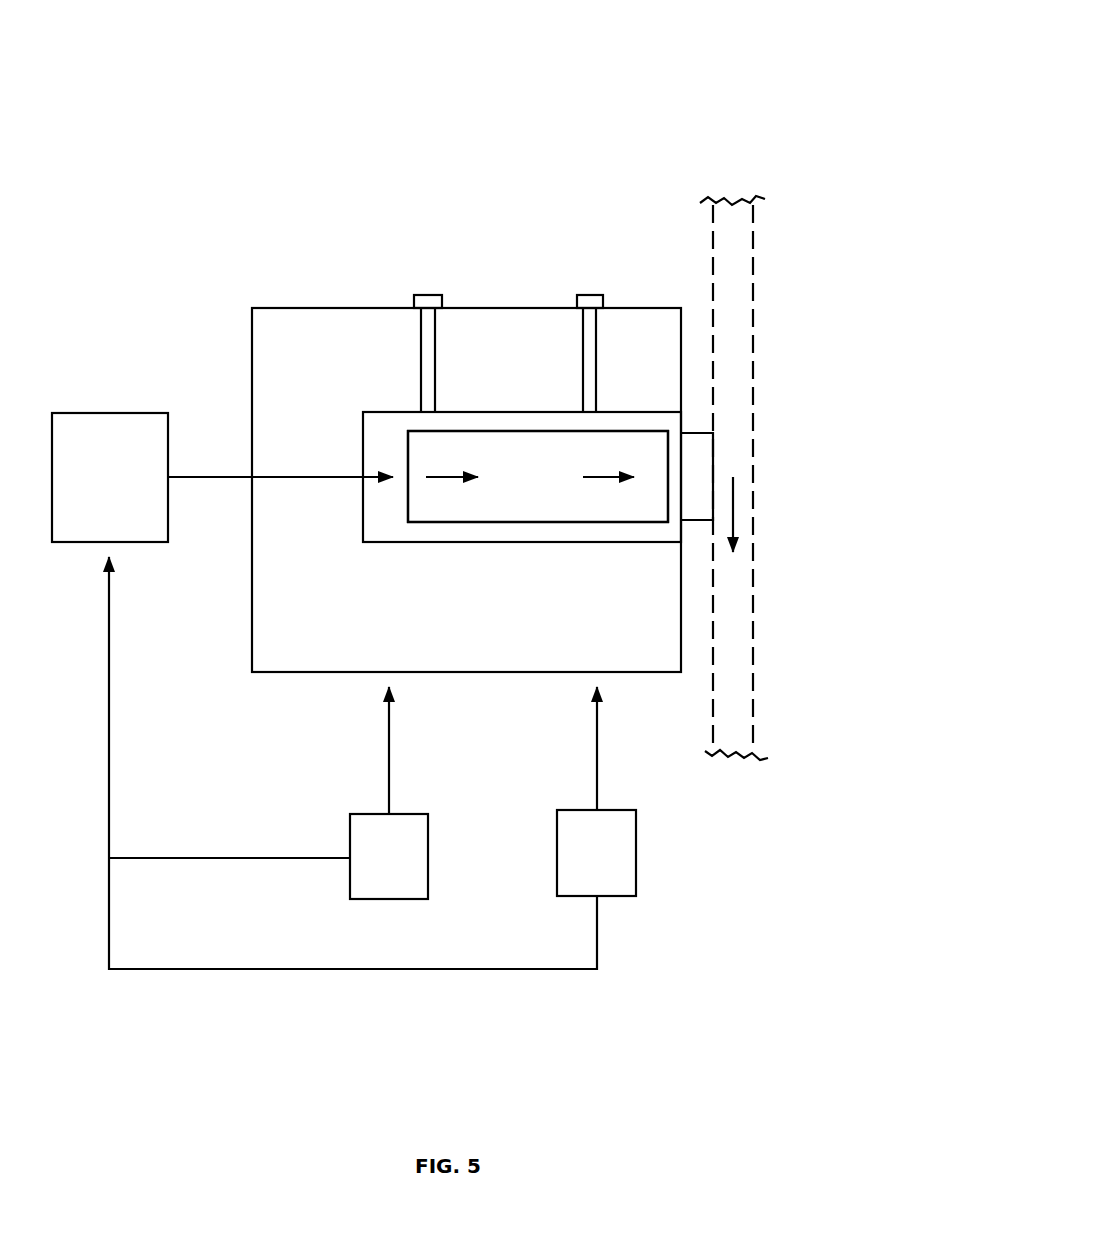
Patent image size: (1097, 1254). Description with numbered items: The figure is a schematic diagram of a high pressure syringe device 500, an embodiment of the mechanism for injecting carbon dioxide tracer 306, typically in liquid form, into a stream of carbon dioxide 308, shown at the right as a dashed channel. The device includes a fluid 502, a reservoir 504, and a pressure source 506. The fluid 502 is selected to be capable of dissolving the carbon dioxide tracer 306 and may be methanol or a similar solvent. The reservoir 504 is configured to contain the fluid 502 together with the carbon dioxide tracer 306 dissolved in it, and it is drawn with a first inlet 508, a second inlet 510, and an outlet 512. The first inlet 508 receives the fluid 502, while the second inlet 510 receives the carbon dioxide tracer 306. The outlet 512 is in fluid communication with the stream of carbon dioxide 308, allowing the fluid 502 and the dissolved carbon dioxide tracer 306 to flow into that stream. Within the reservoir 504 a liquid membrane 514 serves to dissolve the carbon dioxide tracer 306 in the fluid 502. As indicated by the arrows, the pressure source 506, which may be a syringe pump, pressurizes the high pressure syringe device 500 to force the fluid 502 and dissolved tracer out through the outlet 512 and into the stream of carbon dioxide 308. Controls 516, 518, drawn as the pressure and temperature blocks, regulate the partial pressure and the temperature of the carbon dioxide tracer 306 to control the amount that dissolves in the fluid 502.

The high pressure syringe device 500 is at (703, 92).
The fluid 502 is at (553, 465).
The carbon dioxide tracer 306 is at (553, 517).
The reservoir 504 is at (457, 452).
The pressure source 506 is at (131, 489).
The first inlet 508 is at (424, 295).
The second inlet 510 is at (590, 295).
The outlet 512 is at (697, 521).
The liquid membrane 514 is at (430, 522).
The control 516 is at (372, 812).
The control 518 is at (557, 853).
The stream of carbon dioxide 308 is at (763, 672).